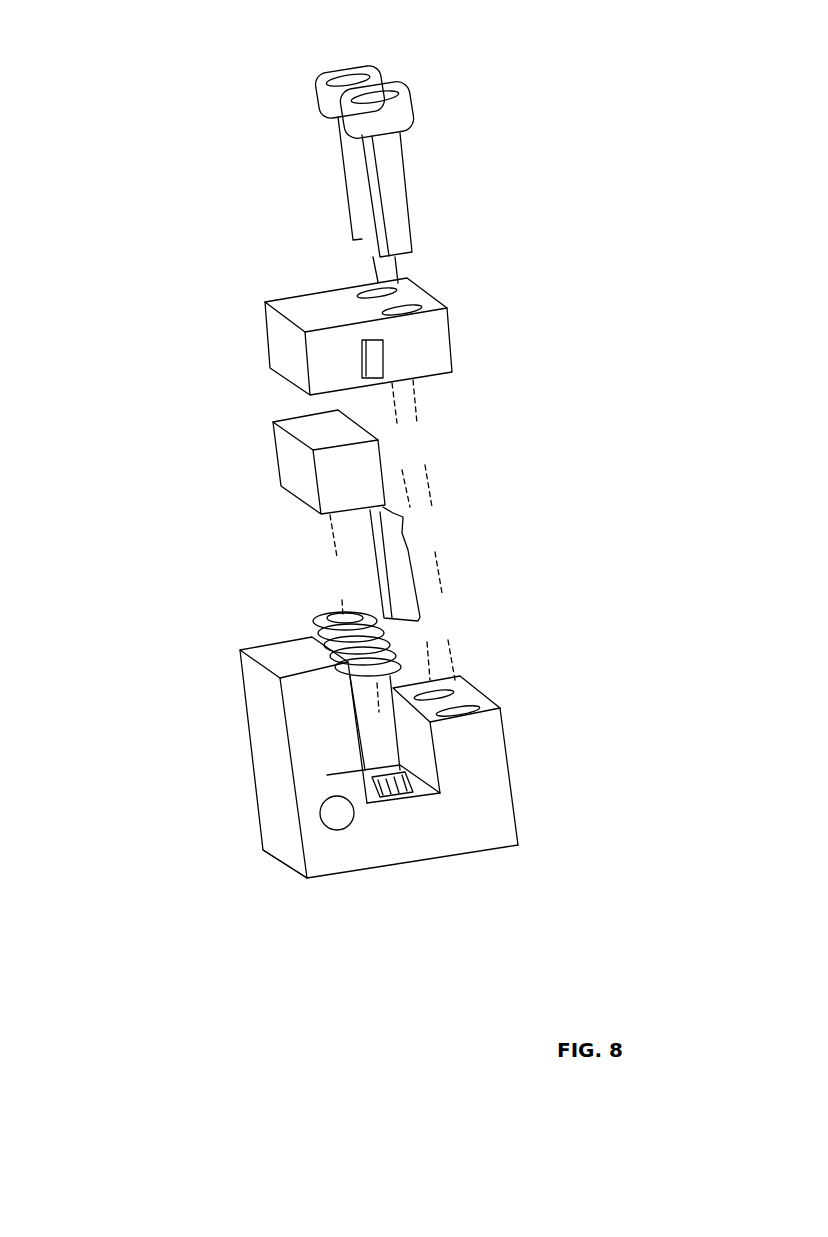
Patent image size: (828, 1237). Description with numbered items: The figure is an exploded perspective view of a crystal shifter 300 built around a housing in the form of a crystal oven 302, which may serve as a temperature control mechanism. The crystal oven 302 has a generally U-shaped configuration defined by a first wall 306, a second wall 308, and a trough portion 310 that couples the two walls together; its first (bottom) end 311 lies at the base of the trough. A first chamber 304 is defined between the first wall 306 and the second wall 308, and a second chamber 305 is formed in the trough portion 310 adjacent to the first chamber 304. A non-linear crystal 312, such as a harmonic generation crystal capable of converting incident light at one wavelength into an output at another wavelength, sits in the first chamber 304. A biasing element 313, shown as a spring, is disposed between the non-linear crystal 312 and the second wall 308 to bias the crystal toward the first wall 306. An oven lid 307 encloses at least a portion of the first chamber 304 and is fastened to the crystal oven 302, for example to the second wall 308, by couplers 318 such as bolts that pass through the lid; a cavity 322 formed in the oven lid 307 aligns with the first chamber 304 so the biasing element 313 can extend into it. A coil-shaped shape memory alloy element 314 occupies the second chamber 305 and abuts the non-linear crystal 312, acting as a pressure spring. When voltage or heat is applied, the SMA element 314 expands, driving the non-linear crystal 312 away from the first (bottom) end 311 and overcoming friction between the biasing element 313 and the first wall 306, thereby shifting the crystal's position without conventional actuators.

The crystal shifter 300 is at (205, 100).
The crystal oven 302 is at (277, 636).
The first chamber 304 is at (408, 735).
The second chamber 305 is at (393, 786).
The first wall 306 is at (260, 712).
The oven lid 307 is at (280, 340).
The second wall 308 is at (507, 763).
The trough portion 310 is at (412, 826).
The first (bottom) end 311 is at (367, 870).
The non-linear crystal 312 is at (293, 467).
The biasing element 313 is at (382, 570).
The shape memory alloy (SMA) element 314 is at (393, 640).
The couplers 318 is at (395, 115).
The cavity 322 is at (375, 371).